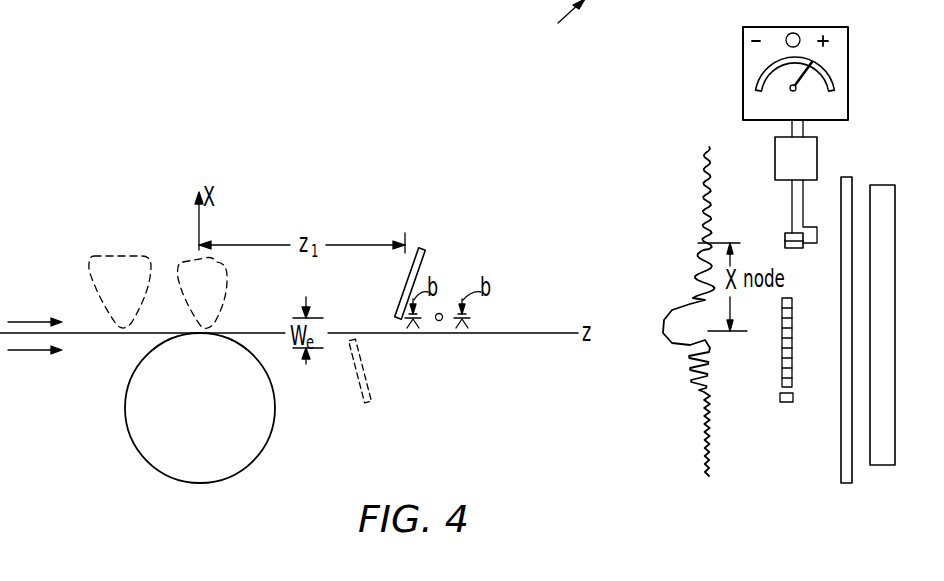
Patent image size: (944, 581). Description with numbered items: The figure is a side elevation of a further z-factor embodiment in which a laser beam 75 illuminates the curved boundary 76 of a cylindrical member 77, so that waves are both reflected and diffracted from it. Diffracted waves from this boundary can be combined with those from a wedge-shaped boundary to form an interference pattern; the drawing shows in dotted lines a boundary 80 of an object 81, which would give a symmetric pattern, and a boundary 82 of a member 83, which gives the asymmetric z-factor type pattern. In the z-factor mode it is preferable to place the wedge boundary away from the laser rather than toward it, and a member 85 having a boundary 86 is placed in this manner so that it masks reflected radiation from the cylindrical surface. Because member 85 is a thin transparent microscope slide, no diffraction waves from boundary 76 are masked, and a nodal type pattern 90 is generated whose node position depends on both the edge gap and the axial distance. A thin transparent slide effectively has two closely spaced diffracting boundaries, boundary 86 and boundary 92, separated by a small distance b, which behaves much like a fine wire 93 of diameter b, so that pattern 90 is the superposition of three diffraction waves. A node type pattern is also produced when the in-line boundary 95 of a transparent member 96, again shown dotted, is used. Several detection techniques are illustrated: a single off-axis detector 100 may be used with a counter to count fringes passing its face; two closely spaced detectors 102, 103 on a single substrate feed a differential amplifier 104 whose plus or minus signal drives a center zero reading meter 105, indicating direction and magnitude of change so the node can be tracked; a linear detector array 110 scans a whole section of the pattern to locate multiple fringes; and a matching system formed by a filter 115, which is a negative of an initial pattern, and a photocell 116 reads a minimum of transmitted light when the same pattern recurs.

The laser beam 75 is at (28, 359).
The boundary 76 is at (147, 355).
The member 77 is at (212, 420).
The boundary 80 is at (222, 327).
The object 81 is at (208, 298).
The boundary 82 is at (136, 327).
The member 83 is at (130, 298).
The member 85 is at (428, 256).
The boundary 86 is at (397, 321).
The nodal type pattern 90 is at (681, 217).
The boundary 92 is at (398, 320).
The fine wire 93 is at (441, 313).
The in-line boundary 95 is at (347, 339).
The transparent member 96 is at (372, 388).
The off-axis detector 100 is at (784, 404).
The detector 102 is at (795, 249).
The detector 103 is at (785, 236).
The differential amplifier 104 is at (775, 160).
The center zero reading meter 105 is at (743, 70).
The linear detector array 110 is at (806, 342).
The filter 115 is at (841, 458).
The photocell 116 is at (881, 466).